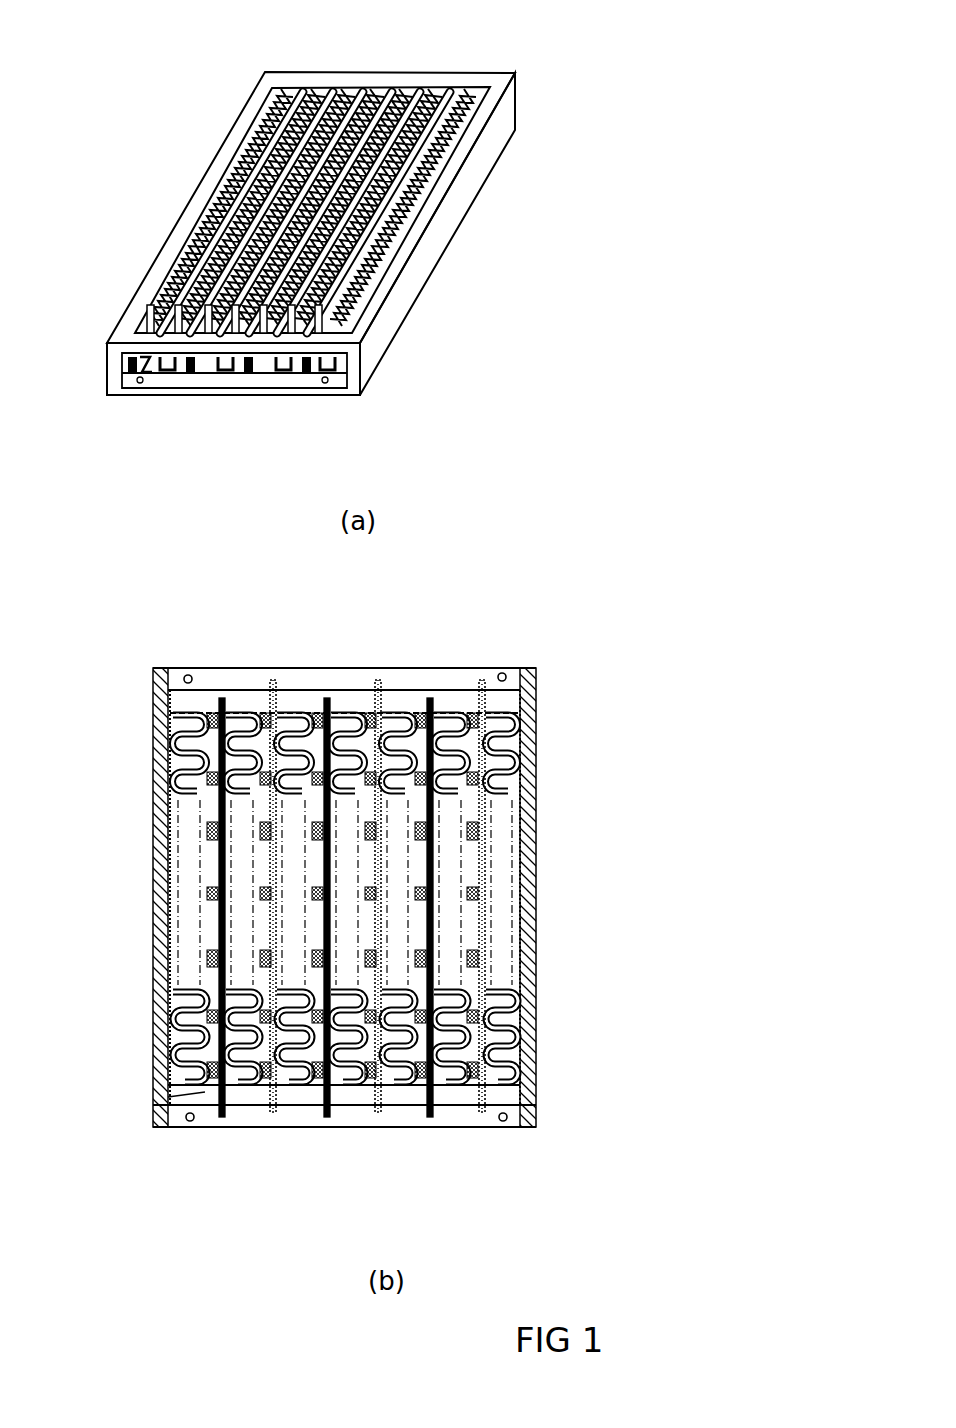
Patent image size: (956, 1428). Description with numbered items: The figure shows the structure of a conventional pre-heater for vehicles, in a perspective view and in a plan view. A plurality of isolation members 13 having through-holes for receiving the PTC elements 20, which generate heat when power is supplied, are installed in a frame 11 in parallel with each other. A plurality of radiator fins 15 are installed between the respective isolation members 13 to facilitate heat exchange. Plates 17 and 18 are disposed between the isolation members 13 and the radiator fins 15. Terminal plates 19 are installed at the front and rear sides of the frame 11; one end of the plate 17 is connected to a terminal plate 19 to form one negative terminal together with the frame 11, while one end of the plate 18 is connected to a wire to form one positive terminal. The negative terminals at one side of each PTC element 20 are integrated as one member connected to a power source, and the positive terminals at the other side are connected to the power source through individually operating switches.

The frame 11 is at (453, 208).
The isolation member 13 is at (452, 84).
The radiator fin 15 is at (462, 128).
The plate 17 is at (130, 374).
The plate 18 is at (190, 398).
The terminal plate 19 is at (160, 396).
The PTC element 20 is at (210, 934).